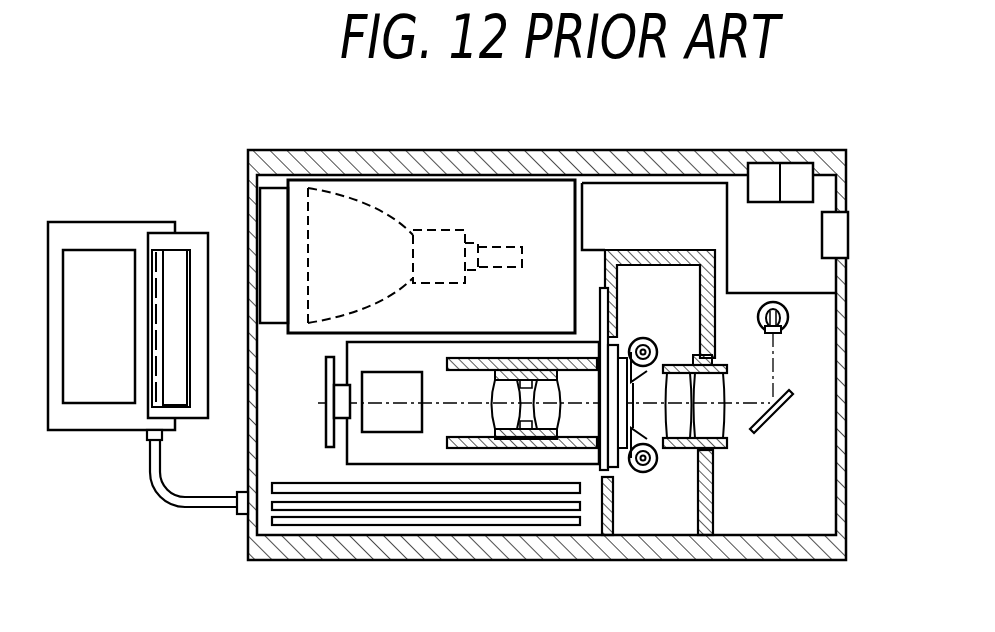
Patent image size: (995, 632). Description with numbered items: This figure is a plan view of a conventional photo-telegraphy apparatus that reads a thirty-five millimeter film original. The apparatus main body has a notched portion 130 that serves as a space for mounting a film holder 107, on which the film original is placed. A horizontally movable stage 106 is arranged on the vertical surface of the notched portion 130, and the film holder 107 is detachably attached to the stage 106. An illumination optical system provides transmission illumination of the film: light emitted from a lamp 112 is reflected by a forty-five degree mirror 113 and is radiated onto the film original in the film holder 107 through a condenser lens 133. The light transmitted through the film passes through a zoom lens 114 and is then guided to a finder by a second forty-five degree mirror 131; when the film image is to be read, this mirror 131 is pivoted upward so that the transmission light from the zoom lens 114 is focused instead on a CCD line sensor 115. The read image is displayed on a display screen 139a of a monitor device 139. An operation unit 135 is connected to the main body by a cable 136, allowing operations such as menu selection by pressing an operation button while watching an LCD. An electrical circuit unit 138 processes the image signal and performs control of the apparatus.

The stage 106 is at (618, 470).
The film holder 107 is at (653, 472).
The lamp 112 is at (790, 317).
The 45° mirror 113 is at (770, 423).
The zoom lens 114 is at (458, 447).
The CCD line sensor 115 is at (335, 412).
The notched portion 130 is at (663, 280).
The 45° mirror 131 is at (387, 420).
The condenser lens 133 is at (675, 450).
The operation unit 135 is at (118, 222).
The cable 136 is at (178, 518).
The electrical circuit unit 138 is at (295, 512).
The monitor device 139 is at (409, 195).
The display screen 139a is at (267, 209).